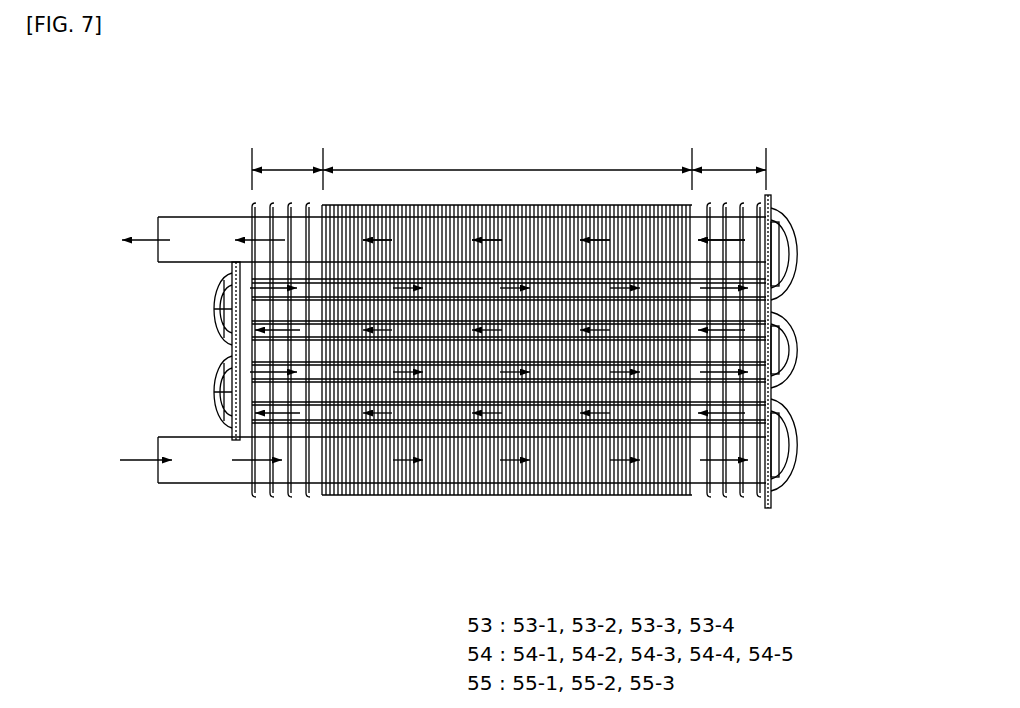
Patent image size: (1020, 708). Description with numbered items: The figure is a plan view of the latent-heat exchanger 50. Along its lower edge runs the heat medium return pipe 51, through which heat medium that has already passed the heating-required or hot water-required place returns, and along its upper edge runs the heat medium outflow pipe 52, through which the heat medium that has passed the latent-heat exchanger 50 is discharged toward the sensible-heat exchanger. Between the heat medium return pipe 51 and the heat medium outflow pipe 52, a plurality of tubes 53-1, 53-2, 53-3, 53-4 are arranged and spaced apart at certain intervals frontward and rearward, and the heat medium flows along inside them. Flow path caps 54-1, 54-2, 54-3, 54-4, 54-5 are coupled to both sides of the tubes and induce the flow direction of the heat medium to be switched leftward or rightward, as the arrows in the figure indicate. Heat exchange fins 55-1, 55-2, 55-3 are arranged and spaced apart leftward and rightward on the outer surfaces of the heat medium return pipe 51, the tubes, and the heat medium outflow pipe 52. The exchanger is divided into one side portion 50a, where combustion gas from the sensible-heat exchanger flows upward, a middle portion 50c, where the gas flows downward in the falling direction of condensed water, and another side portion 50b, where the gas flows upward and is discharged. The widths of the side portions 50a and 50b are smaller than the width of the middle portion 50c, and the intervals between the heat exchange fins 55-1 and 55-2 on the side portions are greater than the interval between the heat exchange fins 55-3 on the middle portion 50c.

The latent-heat exchanger 50 is at (525, 96).
The one side portion 50a is at (733, 367).
The another side portion 50b is at (287, 367).
The middle portion 50c is at (507, 367).
The heat medium return pipe 51 is at (204, 470).
The heat medium outflow pipe 52 is at (200, 230).
The tube 53-1 is at (747, 428).
The tube 53-2 is at (747, 365).
The tube 53-3 is at (747, 318).
The tube 53-4 is at (747, 273).
The flow path cap 54-1 is at (790, 452).
The flow path cap 54-2 is at (216, 389).
The flow path cap 54-3 is at (795, 343).
The flow path cap 54-4 is at (217, 303).
The flow path cap 54-5 is at (790, 242).
The heat exchange fin 55-1 is at (737, 498).
The heat exchange fin 55-2 is at (268, 498).
The heat exchange fin 55-3 is at (496, 498).